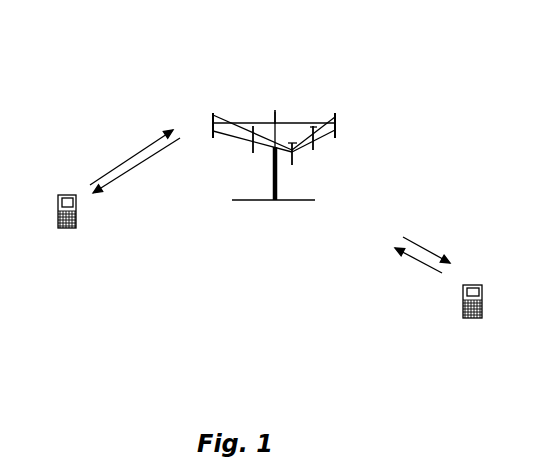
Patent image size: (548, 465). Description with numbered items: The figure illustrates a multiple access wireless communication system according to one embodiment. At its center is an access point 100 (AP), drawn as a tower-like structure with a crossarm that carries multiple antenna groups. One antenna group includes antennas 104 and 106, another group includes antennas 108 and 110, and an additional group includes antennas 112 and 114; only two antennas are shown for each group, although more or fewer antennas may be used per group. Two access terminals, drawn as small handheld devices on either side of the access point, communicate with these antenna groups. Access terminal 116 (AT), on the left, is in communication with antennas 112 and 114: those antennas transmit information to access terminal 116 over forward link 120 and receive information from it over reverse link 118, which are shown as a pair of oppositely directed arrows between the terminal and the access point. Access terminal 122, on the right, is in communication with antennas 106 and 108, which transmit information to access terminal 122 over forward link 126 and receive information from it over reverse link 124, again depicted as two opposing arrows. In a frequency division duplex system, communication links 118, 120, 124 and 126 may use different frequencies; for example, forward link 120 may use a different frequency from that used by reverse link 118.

The access point 100 is at (266, 201).
The antenna 104 is at (292, 164).
The antenna 106 is at (313, 150).
The antenna 108 is at (335, 133).
The antenna 110 is at (277, 110).
The antenna 112 is at (215, 119).
The antenna 114 is at (253, 153).
The access terminal 116 is at (70, 195).
The reverse link 118 is at (133, 157).
The forward link 120 is at (142, 167).
The access terminal 122 is at (473, 284).
The reverse link 124 is at (410, 262).
The forward link 126 is at (430, 250).